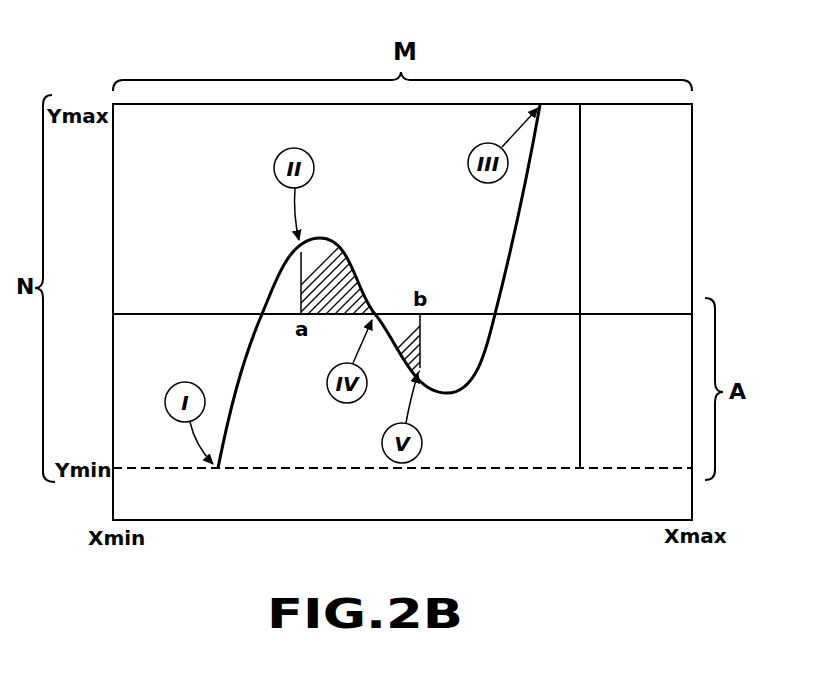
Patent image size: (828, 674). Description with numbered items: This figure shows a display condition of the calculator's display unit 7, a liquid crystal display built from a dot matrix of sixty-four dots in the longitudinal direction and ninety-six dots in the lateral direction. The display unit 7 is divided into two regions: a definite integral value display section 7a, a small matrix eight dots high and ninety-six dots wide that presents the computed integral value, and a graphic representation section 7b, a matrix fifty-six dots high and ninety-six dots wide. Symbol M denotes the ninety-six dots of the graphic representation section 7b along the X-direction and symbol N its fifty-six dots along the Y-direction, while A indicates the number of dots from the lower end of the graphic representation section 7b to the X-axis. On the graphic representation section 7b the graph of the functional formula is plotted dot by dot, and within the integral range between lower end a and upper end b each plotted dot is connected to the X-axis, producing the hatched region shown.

The display unit 7 is at (692, 138).
The definite integral value display section 7a is at (524, 509).
The graphic representation section 7b is at (680, 273).